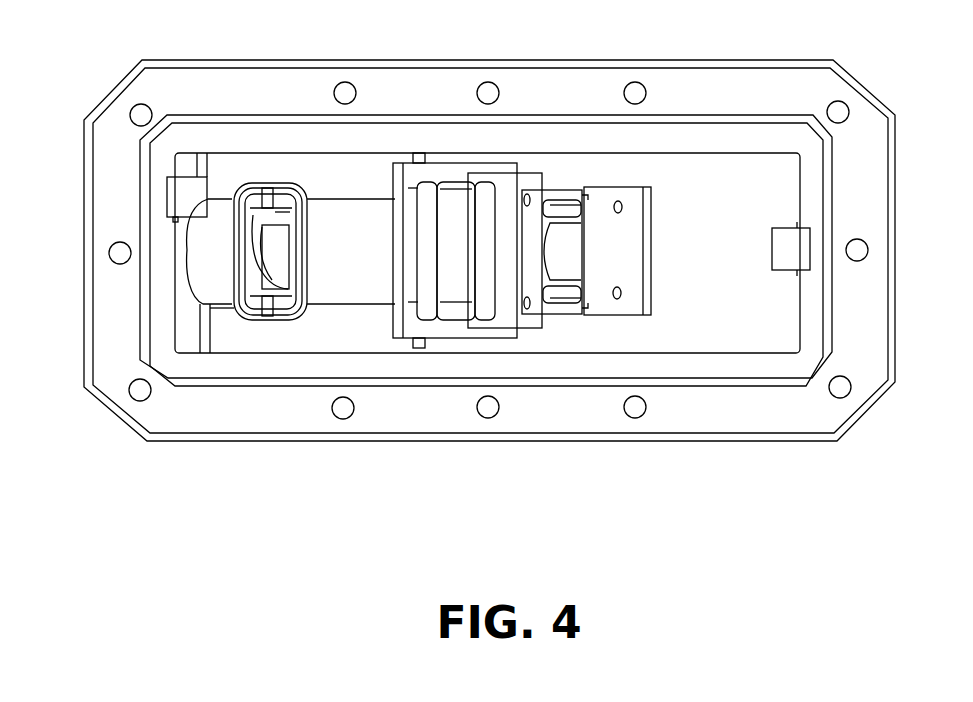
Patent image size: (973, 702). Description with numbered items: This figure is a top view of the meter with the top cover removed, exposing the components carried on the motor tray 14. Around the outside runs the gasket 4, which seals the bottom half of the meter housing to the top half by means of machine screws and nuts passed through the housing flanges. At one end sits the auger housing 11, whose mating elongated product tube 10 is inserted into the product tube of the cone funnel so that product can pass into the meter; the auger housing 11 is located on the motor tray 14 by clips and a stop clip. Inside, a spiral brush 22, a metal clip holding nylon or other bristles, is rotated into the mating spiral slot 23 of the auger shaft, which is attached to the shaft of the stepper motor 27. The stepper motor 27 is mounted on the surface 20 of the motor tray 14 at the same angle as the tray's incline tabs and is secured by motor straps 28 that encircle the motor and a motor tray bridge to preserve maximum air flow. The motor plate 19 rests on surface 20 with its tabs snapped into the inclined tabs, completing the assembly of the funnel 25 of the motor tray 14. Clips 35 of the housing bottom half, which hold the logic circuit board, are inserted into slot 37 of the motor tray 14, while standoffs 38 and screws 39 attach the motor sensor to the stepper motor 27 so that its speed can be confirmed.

The gasket 4 is at (867, 290).
The mating elongated product tube 10 is at (252, 318).
The auger housing 11 is at (337, 263).
The motor tray 14 is at (702, 308).
The motor plate 19 is at (432, 330).
The surface 20 is at (533, 330).
The spiral brush 22 is at (260, 220).
The spiral slot 23 is at (258, 243).
The funnel 25 is at (273, 250).
The stepper motor 27 is at (460, 230).
The motor straps 28 is at (432, 187).
The clips 35 is at (180, 198).
The slot 37 is at (190, 177).
The standoffs 38 is at (578, 197).
The screws 39 is at (622, 202).